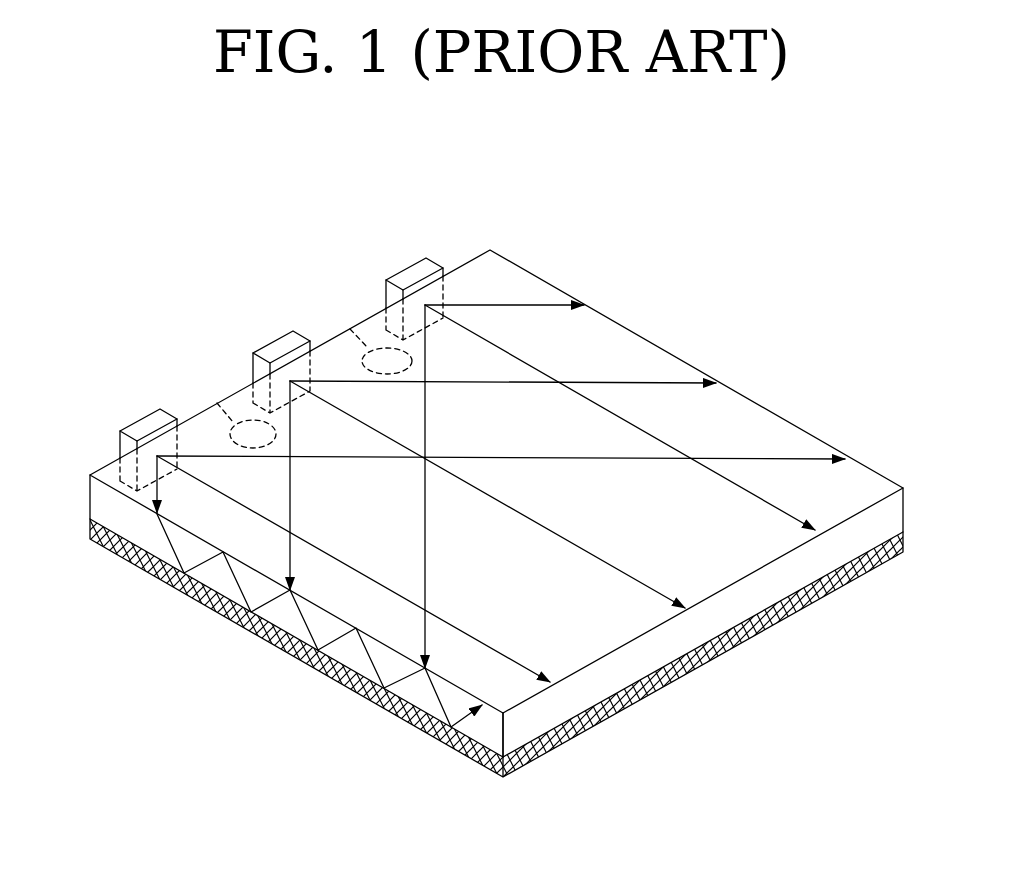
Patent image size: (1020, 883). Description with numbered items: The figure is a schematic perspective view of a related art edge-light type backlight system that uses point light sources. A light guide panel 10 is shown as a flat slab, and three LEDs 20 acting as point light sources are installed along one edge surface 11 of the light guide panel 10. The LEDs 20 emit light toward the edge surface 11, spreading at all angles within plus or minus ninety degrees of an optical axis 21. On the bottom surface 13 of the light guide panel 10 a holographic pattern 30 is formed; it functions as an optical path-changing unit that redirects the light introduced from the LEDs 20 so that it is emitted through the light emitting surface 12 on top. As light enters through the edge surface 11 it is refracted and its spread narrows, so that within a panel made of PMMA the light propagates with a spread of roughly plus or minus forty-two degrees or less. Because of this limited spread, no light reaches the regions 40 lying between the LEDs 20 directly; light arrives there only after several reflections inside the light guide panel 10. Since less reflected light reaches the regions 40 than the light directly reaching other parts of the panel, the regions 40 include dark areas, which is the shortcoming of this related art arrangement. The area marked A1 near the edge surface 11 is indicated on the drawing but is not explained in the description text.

The light guide panel 10 is at (466, 514).
The edge surface 11 is at (90, 497).
The light emitting surface 12 is at (758, 420).
The bottom surface 13 is at (547, 718).
The LEDs 20 is at (415, 271).
The optical axis 21 is at (787, 513).
The holographic pattern 30 is at (317, 670).
The regions 40 is at (350, 329).
The light emission area A1 is at (332, 407).